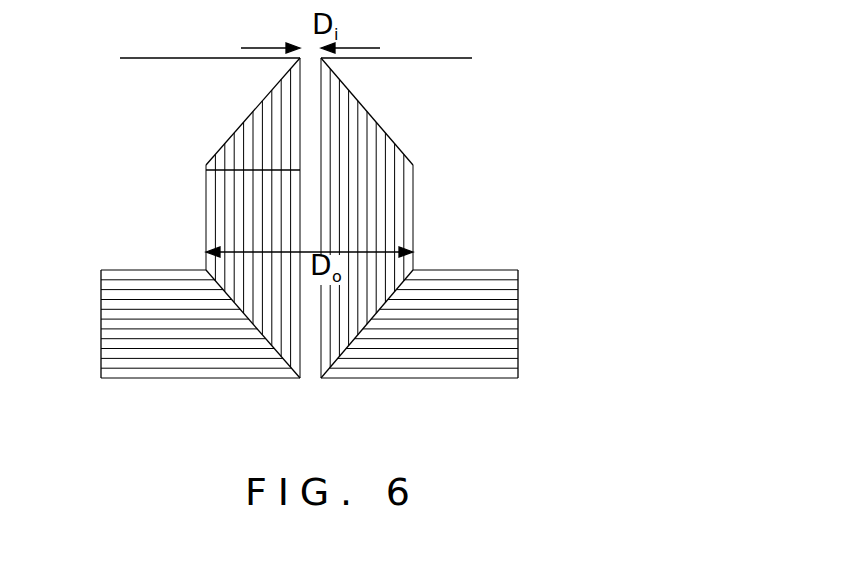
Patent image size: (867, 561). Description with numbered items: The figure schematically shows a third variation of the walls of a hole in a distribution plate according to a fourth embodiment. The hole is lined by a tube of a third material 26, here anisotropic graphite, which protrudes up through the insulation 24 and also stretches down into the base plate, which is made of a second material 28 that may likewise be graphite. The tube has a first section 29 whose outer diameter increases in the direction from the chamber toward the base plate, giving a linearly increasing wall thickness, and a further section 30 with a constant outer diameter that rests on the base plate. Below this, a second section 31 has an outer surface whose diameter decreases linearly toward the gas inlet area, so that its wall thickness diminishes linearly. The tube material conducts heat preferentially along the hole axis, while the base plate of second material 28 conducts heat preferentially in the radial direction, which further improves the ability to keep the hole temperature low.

The insulation 24 is at (158, 130).
The third material 26 is at (325, 218).
The second material 28 is at (187, 352).
The first section 29 is at (285, 75).
The further section 30 is at (253, 202).
The second section 31 is at (253, 311).